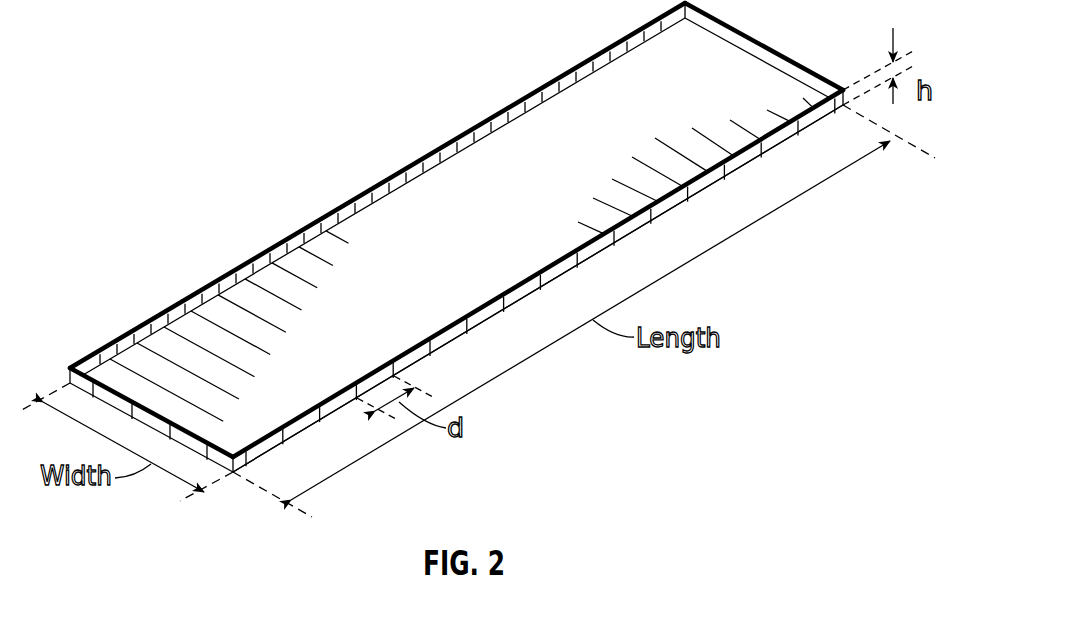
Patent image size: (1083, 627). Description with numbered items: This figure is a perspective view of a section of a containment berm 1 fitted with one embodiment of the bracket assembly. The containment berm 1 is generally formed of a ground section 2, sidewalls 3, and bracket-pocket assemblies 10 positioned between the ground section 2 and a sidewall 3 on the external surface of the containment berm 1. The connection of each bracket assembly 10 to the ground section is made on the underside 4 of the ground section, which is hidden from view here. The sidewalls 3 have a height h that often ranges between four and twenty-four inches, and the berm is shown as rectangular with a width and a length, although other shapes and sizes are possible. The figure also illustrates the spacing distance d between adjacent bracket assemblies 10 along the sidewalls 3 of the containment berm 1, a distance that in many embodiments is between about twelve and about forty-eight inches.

The containment berm 1 is at (314, 161).
The ground section 2 is at (526, 198).
The sidewalls 3 is at (759, 44).
The underside 4 is at (491, 333).
The bracket-pocket assemblies 10 is at (319, 434).